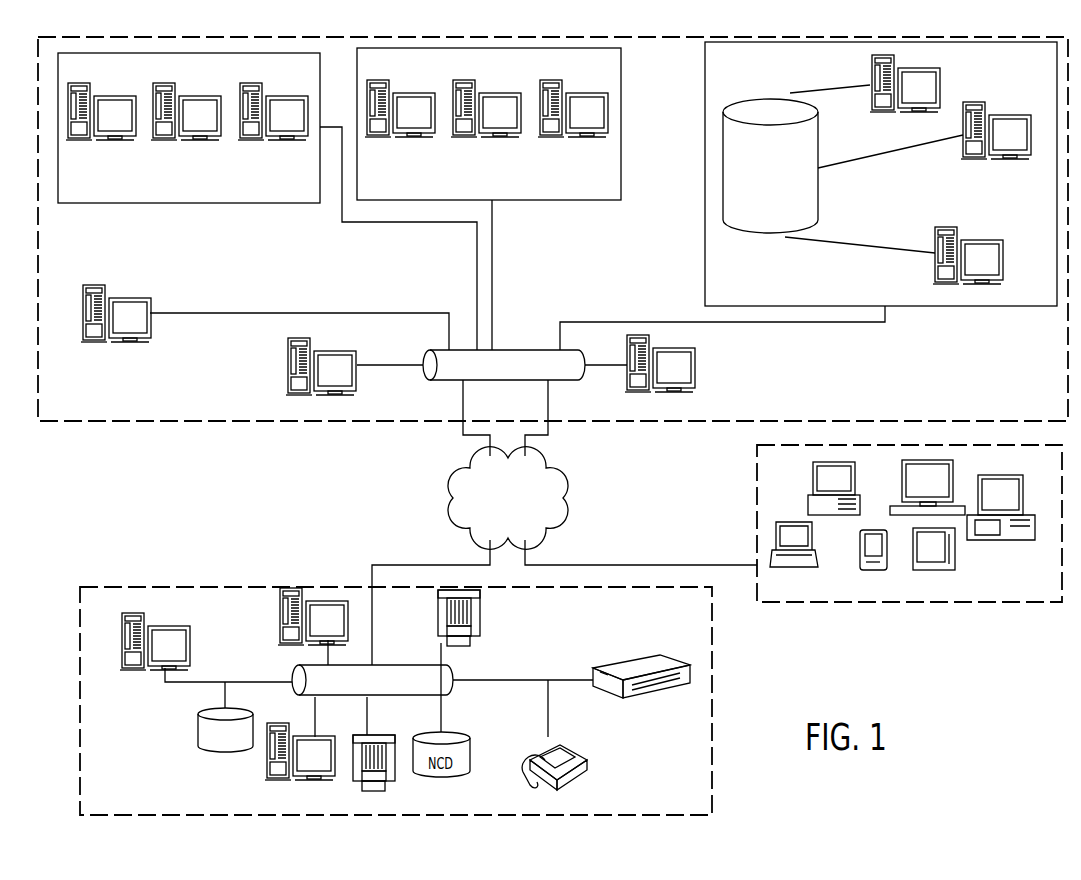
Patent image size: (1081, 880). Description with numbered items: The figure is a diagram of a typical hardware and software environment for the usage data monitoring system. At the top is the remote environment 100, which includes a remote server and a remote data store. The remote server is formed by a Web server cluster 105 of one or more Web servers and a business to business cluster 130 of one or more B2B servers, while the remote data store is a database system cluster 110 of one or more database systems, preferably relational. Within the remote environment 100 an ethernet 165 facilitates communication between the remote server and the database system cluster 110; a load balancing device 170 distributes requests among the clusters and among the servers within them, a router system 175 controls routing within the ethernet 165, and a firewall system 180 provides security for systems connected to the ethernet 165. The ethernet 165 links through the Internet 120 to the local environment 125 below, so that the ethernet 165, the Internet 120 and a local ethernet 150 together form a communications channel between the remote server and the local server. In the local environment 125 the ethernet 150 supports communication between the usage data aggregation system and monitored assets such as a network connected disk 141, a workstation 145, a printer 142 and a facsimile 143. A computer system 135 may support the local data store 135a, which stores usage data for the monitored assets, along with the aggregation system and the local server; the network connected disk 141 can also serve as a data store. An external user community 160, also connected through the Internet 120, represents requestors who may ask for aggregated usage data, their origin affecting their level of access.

The remote environment 100 is at (275, 422).
The Web server cluster 105 is at (621, 108).
The database system cluster 110 is at (953, 306).
The Internet 120 is at (564, 498).
The local environment 125 is at (226, 586).
The business to business (B2B) cluster 130 is at (201, 203).
The computer system 135 is at (190, 646).
The local data store 135a is at (133, 670).
The network connected disk 141 is at (197, 728).
The printer 142 is at (482, 610).
The facsimile 143 is at (588, 756).
The workstation 145 is at (280, 780).
The ethernet 150 is at (386, 665).
The external user community 160 is at (828, 602).
The ethernet 165 is at (527, 350).
The load balancing device 170 is at (128, 298).
The router system 175 is at (357, 353).
The firewall system 180 is at (697, 365).